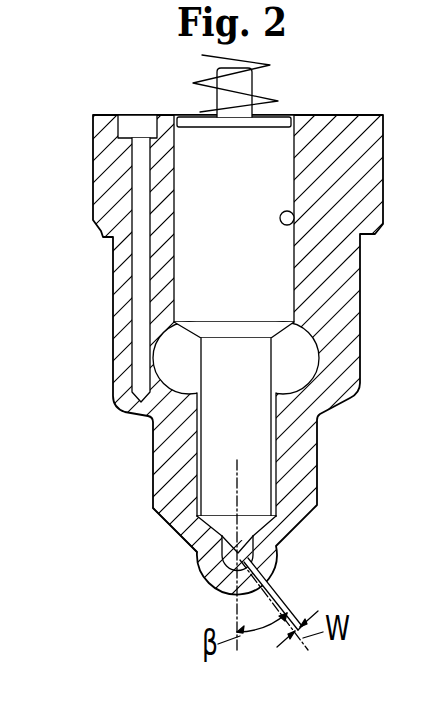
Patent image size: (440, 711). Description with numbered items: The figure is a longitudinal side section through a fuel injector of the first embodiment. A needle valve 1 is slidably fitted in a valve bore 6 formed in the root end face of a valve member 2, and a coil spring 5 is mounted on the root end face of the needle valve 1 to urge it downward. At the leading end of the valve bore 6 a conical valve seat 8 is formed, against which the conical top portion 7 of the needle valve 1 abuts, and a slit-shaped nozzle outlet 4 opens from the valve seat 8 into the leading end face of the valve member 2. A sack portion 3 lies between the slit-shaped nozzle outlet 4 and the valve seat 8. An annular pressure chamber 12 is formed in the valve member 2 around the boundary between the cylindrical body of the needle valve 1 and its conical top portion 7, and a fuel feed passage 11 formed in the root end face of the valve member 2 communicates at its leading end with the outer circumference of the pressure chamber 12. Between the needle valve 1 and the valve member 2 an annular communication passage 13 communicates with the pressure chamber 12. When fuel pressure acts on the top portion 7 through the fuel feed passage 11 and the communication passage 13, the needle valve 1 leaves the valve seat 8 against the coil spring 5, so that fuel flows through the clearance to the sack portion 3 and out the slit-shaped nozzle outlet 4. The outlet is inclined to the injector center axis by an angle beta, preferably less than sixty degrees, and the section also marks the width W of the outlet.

The needle valve 1 is at (238, 382).
The valve member 2 is at (293, 457).
The sack portion 3 is at (262, 548).
The slit-shaped nozzle outlet 4 is at (270, 570).
The coil spring 5 is at (263, 72).
The valve bore 6 is at (293, 221).
The conical top portion 7 is at (275, 531).
The conical valve seat 8 is at (197, 533).
The fuel feed passage 11 is at (142, 273).
The annular pressure chamber 12 is at (185, 375).
The annular communication passage 13 is at (162, 522).